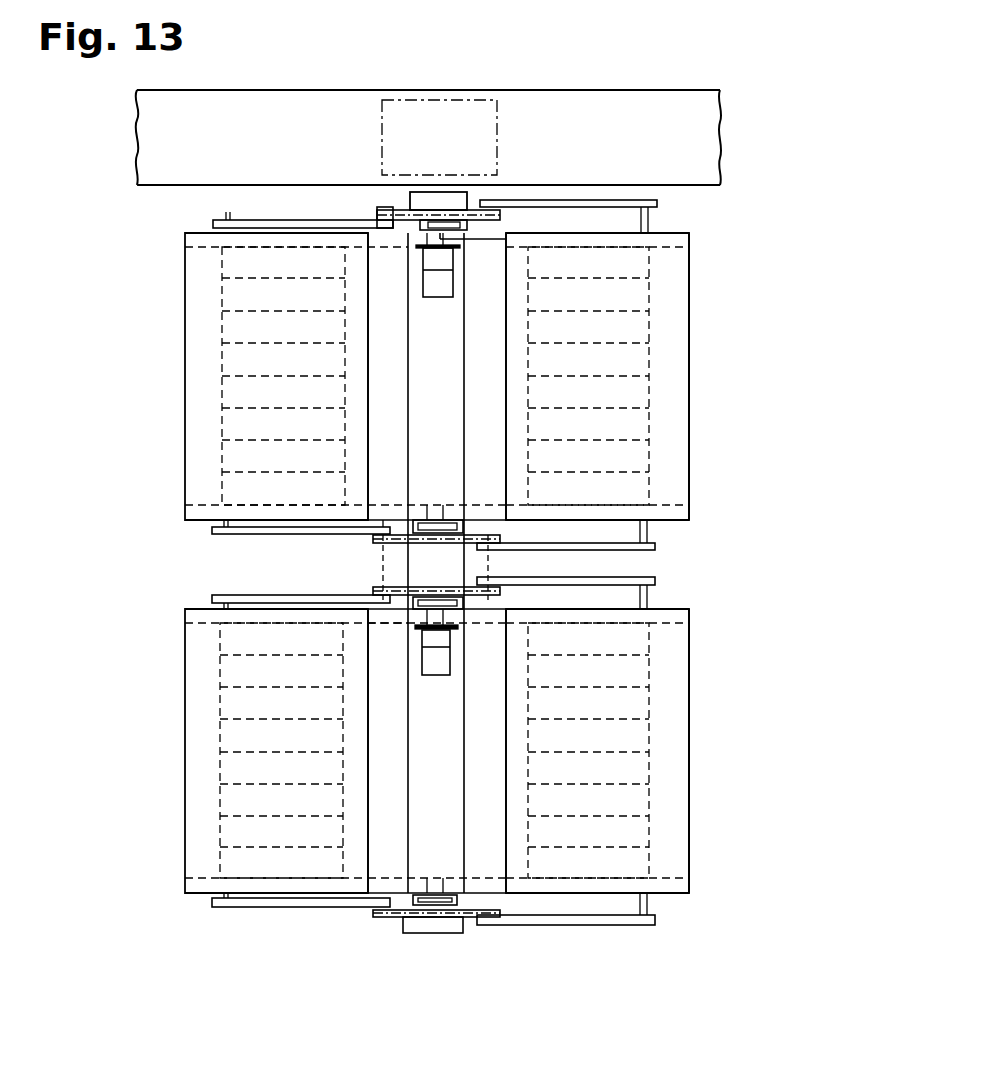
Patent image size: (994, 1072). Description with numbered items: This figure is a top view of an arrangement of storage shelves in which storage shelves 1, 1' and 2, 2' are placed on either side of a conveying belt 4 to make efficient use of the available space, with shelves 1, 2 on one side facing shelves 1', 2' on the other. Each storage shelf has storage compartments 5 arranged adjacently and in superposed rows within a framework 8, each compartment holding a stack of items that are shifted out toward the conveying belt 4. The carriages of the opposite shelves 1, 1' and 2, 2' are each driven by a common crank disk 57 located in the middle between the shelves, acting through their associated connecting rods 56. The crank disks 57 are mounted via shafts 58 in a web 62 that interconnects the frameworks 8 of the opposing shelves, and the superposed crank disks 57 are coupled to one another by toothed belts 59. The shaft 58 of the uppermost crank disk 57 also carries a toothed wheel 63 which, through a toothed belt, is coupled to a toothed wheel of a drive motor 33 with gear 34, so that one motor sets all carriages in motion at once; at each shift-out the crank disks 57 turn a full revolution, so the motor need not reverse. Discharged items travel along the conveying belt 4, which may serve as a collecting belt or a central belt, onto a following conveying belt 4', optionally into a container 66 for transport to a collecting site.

The storage shelf 1 is at (269, 376).
The storage shelf 1' is at (635, 376).
The storage shelf 2 is at (265, 751).
The storage shelf 2' is at (635, 751).
The conveying belt 4 is at (561, 563).
The conveying belt 4' is at (429, 115).
The storage compartment 5 is at (225, 450).
The framework 8 is at (692, 290).
The drive motor 33 is at (430, 282).
The gear 34 is at (423, 257).
The connecting rod 56 is at (645, 195).
The crank disk 57 is at (377, 215).
The shaft 58 is at (692, 236).
The toothed belt 59 is at (380, 193).
The web 62 is at (468, 222).
The toothed wheel 63 is at (505, 221).
The container 66 is at (498, 135).